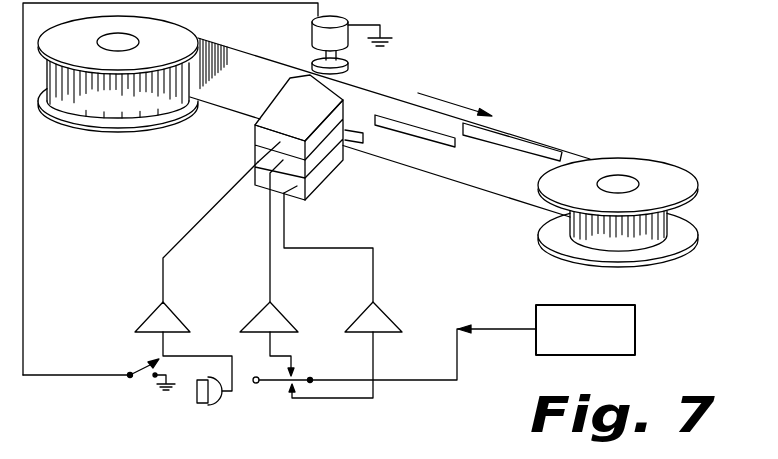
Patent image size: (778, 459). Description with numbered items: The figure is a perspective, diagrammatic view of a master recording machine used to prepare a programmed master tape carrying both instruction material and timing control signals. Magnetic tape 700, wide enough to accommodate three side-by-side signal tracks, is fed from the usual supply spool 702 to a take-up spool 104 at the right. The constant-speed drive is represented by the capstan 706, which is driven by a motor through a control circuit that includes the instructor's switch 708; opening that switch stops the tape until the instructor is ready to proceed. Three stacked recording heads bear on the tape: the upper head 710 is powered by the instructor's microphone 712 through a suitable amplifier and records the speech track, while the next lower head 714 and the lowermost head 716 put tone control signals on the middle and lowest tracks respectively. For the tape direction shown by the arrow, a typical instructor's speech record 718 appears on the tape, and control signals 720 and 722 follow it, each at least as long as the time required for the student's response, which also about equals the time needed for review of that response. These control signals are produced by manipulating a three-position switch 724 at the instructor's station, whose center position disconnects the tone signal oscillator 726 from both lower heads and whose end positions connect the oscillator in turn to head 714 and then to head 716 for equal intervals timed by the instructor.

The magnetic tape 700 is at (263, 50).
The supply spool 702 is at (188, 53).
The take-up reel 104 is at (684, 198).
The capstan 706 is at (348, 72).
The instructor's switch 708 is at (150, 362).
The upper head 710 is at (318, 115).
The next lower head 714 is at (255, 155).
The lowermost head 716 is at (262, 180).
The instructor's microphone 712 is at (217, 400).
The instructor's speech record 718 is at (543, 152).
The control signal 720 is at (443, 147).
The control signal 722 is at (358, 141).
The three-position switch 724 is at (300, 372).
The tone signal oscillator 726 is at (574, 305).